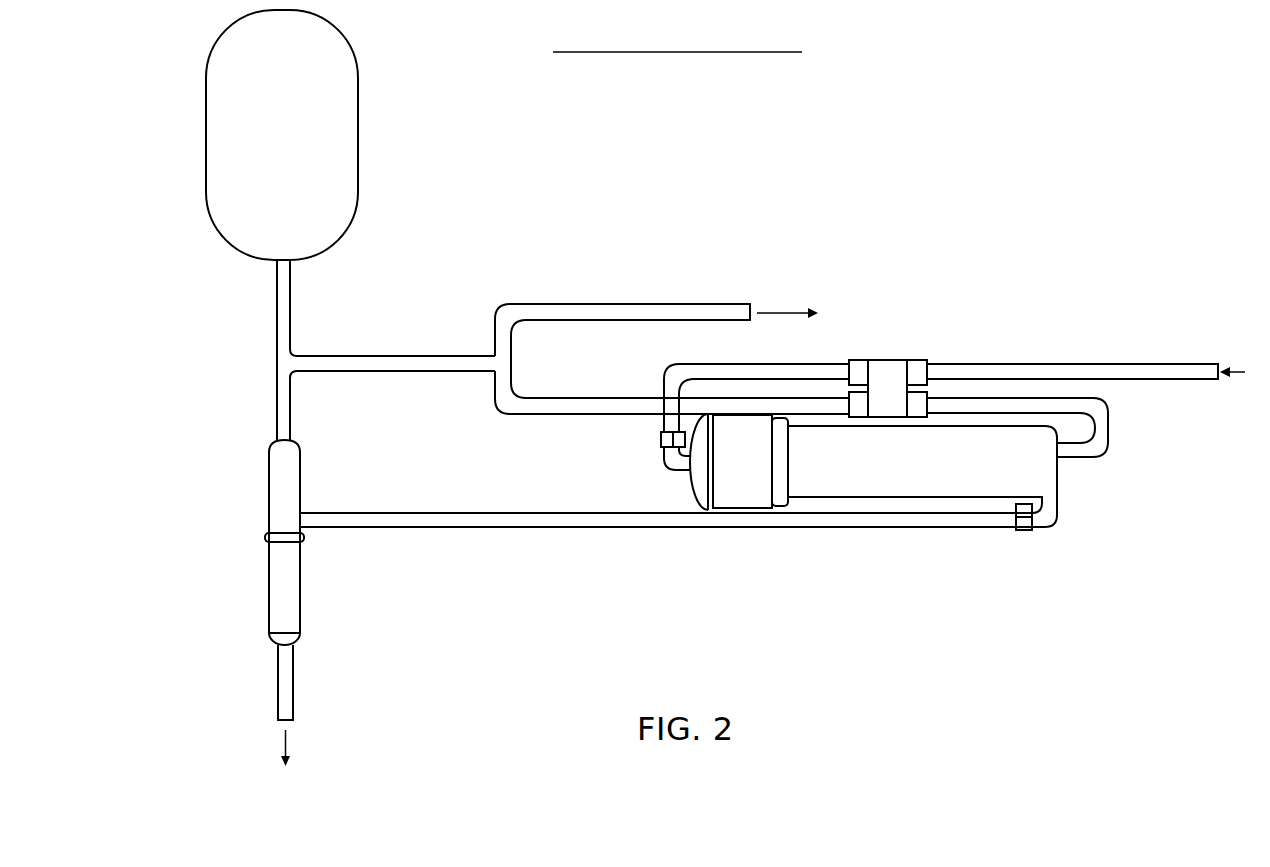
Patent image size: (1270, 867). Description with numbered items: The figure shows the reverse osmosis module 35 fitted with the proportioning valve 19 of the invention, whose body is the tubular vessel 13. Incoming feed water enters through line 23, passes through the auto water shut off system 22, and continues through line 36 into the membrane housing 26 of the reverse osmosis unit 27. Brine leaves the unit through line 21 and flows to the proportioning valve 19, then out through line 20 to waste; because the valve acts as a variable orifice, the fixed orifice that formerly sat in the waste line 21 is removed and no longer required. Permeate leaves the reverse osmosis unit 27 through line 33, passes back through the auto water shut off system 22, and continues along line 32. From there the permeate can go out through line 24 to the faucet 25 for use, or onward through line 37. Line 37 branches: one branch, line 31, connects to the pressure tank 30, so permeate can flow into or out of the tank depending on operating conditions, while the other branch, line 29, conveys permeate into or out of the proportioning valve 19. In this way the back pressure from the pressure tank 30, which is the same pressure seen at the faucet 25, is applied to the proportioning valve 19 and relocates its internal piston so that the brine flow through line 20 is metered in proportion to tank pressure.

The tubular vessel 13 is at (280, 485).
The proportioning valve 19 is at (269, 547).
The waste line 20 is at (293, 687).
The brine line 21 is at (591, 528).
The auto water shut off system 22 is at (887, 360).
The feed water line 23 is at (1201, 364).
The faucet line 24 is at (634, 304).
The faucet 25 is at (793, 311).
The membrane housing 26 is at (690, 483).
The reverse osmosis unit 27 is at (921, 473).
The branch line 29 is at (277, 405).
The pressure tank 30 is at (272, 123).
The tank line 31 is at (277, 333).
The permeate line 32 is at (565, 398).
The permeate outlet line 33 is at (1108, 429).
The reverse osmosis module 35 is at (829, 127).
The feed line 36 is at (664, 387).
The permeate branch line 37 is at (384, 356).